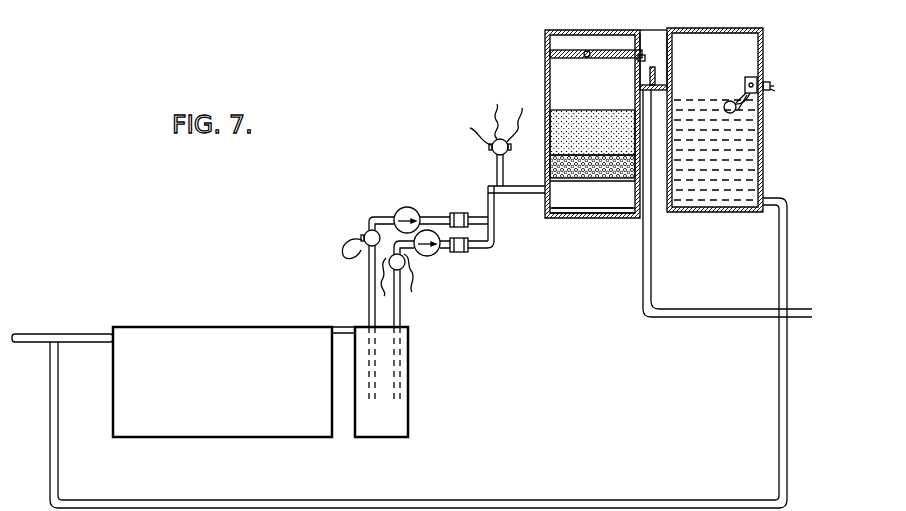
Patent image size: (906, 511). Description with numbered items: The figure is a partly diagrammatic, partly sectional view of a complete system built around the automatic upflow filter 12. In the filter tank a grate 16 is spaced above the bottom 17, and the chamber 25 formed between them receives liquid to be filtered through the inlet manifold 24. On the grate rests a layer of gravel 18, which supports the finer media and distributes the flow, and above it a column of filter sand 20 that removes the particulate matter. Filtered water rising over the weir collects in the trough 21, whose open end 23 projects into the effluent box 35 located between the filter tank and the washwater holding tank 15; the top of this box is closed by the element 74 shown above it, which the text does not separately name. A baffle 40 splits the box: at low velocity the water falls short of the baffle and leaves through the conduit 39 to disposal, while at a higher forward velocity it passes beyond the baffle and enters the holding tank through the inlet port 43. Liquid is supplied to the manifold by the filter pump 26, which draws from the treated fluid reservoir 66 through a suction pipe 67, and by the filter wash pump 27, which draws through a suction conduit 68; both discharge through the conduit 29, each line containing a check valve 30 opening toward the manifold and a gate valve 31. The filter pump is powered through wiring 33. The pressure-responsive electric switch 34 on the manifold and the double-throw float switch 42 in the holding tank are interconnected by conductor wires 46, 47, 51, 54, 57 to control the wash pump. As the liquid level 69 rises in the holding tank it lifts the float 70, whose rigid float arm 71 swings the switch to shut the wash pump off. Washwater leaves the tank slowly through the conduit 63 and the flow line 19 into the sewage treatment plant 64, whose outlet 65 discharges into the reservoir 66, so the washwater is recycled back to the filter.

The automatic upflow filter 12 is at (542, 47).
The washwater holding tank 15 is at (763, 51).
The grate 16 is at (598, 179).
The bottom 17 is at (588, 213).
The layer of gravel 18 is at (623, 176).
The flow line 19 is at (38, 334).
The filter sand 20 is at (605, 118).
The weir and trough 21 is at (587, 60).
The open end of the trough 23 is at (641, 60).
The inlet manifold 24 is at (505, 193).
The chamber 25 is at (623, 206).
The filter pump 26 is at (366, 231).
The filter wash pump 27 is at (405, 268).
The conduit 29 is at (390, 210).
The check valve 30 is at (418, 208).
The gate valve 31 is at (460, 212).
The wiring 33 is at (341, 243).
The pressure-responsive electric switch 34 is at (507, 152).
The effluent box 35 is at (657, 56).
The conduit 39 is at (704, 310).
The baffle 40 is at (657, 68).
The double-throw float switch 42 is at (750, 78).
The inlet port 43 is at (670, 85).
The conductor wire 46 is at (774, 86).
The conductor wire 47 is at (388, 288).
The conductor wire 51 is at (411, 281).
The conductor wire 54 is at (778, 80).
The conductor wire 57 is at (775, 91).
The conduit 63 is at (773, 493).
The sewage treatment plant 64 is at (198, 335).
The outlet 65 is at (340, 326).
The treated fluid reservoir 66 is at (412, 383).
The suction pipe 67 is at (369, 279).
The suction conduit 68 is at (401, 311).
The liquid level 69 is at (701, 113).
The float 70 is at (728, 113).
The float arm 71 is at (744, 106).
The cover 74 is at (655, 28).